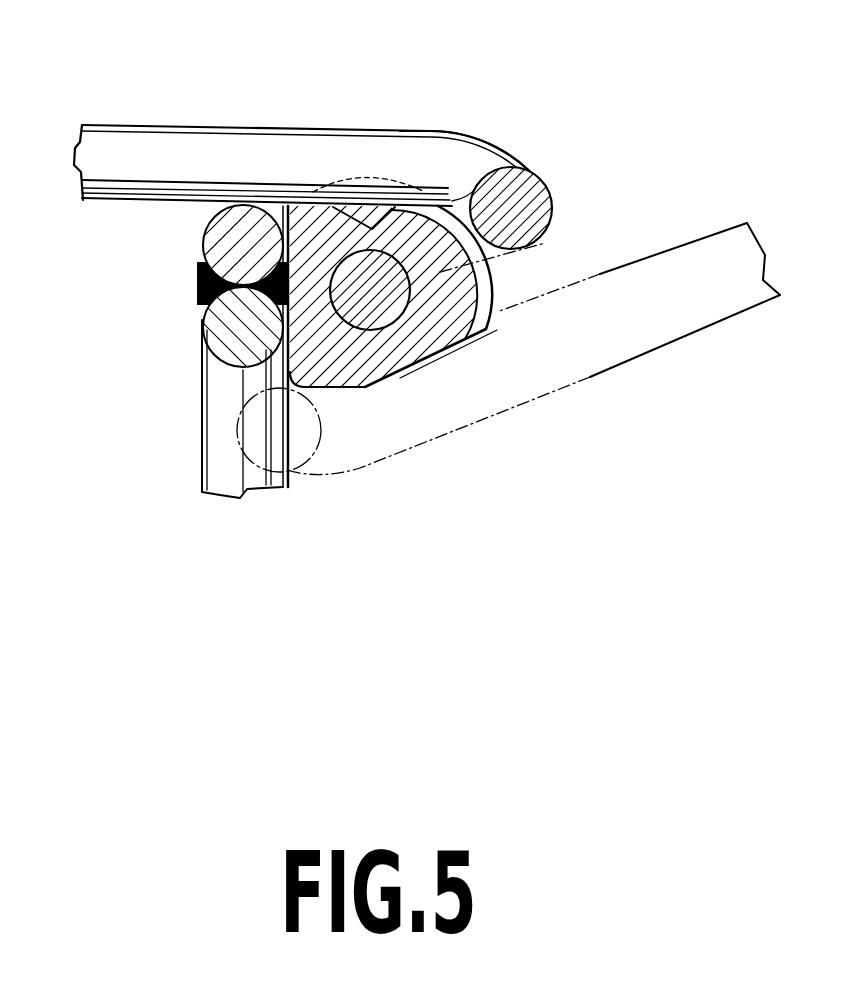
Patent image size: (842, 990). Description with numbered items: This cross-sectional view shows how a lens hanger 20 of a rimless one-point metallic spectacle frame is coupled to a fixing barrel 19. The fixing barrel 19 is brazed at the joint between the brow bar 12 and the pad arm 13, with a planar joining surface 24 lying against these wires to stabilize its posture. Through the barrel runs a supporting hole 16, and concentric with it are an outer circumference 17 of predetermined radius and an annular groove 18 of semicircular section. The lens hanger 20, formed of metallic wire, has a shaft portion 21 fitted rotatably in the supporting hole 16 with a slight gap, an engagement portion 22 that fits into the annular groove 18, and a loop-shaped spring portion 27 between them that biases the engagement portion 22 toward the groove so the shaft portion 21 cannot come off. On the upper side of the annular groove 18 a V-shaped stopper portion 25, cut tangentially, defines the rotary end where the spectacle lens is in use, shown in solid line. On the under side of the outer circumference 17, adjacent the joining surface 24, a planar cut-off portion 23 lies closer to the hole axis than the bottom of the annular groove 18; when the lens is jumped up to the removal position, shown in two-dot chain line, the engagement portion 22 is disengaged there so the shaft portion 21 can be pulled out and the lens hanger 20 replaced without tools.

The brow bar 12 is at (233, 217).
The pad arm 13 is at (212, 444).
The supporting hole 16 is at (353, 253).
The outer circumference 17 is at (503, 282).
The annular groove 18 is at (472, 323).
The fixing barrel 19 is at (345, 382).
The lens hanger 20 is at (122, 135).
The shaft portion 21 is at (458, 347).
The engagement portion 22 is at (380, 142).
The cut-off portion 23 is at (412, 378).
The joining surface 24 is at (270, 243).
The stopper portion 25 is at (380, 200).
The spring portion 27 is at (537, 180).